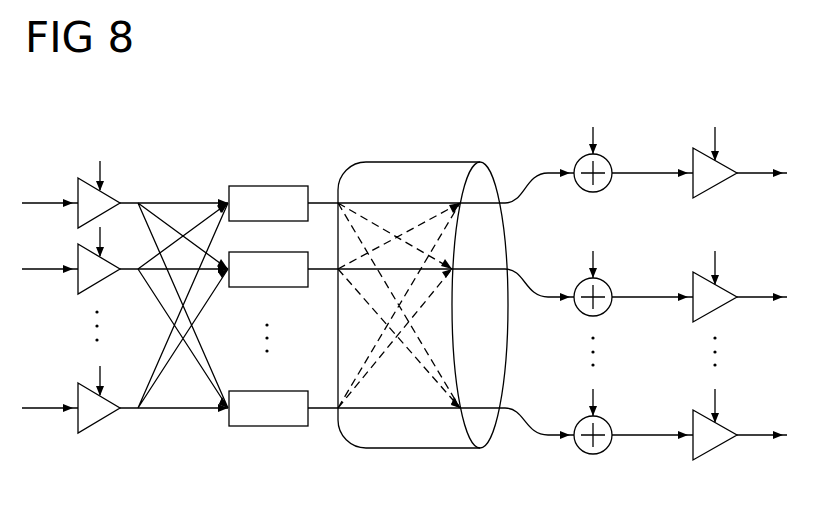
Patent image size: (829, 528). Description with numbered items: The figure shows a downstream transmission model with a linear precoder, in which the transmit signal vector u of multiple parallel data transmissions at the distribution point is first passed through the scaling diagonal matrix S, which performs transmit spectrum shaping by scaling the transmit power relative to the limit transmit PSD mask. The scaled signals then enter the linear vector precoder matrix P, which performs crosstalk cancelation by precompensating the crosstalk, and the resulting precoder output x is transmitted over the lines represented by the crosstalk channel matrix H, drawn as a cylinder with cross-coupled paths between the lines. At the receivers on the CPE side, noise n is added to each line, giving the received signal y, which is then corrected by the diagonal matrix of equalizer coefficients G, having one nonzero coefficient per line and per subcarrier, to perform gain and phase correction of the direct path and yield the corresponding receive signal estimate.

The transmit signal vector u is at (50, 284).
The scaling diagonal matrix S is at (153, 264).
The precoder matrix P is at (268, 259).
The precoder output signal x is at (441, 300).
The crosstalk channel matrix H is at (423, 270).
The noise n is at (577, 288).
The receive signal before equalization y is at (652, 281).
The diagonal matrix of equalizer coefficients G is at (715, 276).